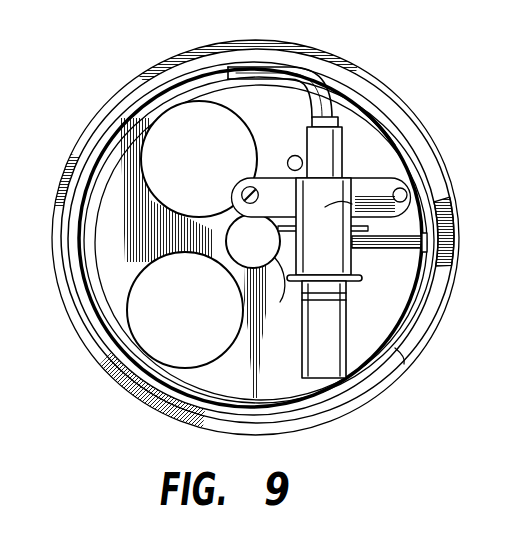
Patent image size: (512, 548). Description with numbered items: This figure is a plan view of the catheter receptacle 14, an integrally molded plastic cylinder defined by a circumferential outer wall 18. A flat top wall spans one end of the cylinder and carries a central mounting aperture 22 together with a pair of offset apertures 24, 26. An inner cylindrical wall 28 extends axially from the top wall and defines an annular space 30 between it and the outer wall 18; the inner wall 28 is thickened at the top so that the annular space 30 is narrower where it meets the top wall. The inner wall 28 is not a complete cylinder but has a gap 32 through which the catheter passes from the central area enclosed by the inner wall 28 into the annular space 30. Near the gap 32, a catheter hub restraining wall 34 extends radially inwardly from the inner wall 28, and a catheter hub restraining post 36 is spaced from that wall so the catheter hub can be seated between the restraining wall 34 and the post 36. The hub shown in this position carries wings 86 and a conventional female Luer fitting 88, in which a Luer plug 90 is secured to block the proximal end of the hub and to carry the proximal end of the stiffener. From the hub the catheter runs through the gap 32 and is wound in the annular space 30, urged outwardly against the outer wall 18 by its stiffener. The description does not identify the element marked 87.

The catheter receptacle 14 is at (351, 456).
The circumferential outer wall 18 is at (143, 78).
The central mounting aperture 22 is at (256, 270).
The offset aperture 24 is at (145, 352).
The offset aperture 26 is at (146, 150).
The inner cylindrical wall 28 is at (230, 68).
The annular space 30 is at (403, 352).
The gap 32 is at (289, 68).
The catheter hub restraining wall 34 is at (405, 247).
The catheter hub restraining post 36 is at (296, 154).
The wings 86 is at (376, 193).
The rim pad 87 is at (446, 238).
The female Luer fitting 88 is at (322, 265).
The Luer plug 90 is at (338, 350).